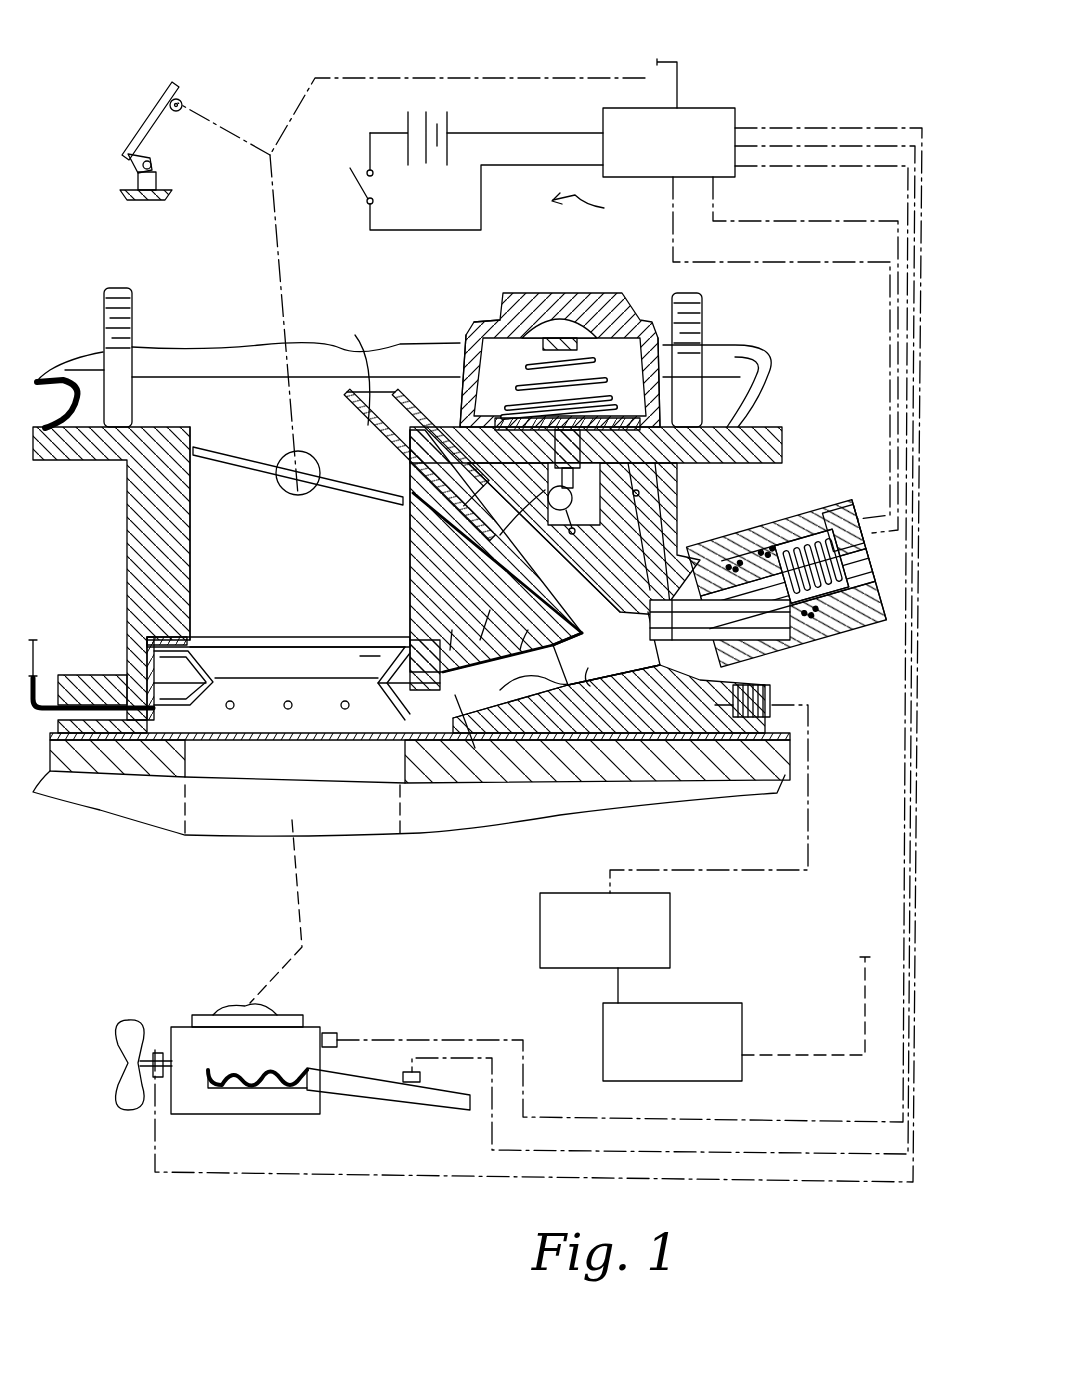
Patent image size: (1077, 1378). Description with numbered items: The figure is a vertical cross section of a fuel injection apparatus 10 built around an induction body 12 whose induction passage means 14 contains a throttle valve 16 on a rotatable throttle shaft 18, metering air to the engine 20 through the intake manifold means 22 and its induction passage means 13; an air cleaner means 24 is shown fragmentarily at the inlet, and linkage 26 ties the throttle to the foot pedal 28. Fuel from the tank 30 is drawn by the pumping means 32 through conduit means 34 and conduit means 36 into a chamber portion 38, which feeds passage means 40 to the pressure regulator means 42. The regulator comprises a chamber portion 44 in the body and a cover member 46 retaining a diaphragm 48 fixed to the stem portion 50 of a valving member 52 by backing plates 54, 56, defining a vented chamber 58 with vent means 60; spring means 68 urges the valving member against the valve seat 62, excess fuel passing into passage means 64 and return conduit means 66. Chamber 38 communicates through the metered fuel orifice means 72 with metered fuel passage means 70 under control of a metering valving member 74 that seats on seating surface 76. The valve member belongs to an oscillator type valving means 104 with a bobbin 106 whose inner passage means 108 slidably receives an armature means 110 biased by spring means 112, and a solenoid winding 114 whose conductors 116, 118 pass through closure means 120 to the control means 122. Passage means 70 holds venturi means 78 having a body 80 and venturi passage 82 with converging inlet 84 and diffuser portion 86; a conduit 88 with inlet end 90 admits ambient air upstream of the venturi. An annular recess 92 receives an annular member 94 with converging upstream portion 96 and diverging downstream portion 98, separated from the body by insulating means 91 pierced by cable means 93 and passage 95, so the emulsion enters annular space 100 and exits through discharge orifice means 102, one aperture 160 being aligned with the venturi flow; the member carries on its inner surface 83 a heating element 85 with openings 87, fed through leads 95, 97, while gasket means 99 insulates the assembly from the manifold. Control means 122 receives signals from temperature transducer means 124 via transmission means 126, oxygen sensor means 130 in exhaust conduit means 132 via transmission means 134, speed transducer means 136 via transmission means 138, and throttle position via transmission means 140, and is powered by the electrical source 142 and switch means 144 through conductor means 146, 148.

The fuel injection apparatus 10 is at (200, 345).
The induction body 12 is at (124, 527).
The engine intake manifold induction passage means 13 is at (400, 745).
The induction passage means 14 is at (318, 574).
The throttle valve 16 is at (360, 497).
The throttle shaft 18 is at (288, 490).
The engine 20 is at (305, 1035).
The engine intake manifold means 22 is at (200, 830).
The air cleaner means 24 is at (70, 370).
The linkage and motion transmitting means 26 is at (272, 196).
The throttle pedal 28 is at (150, 100).
The fuel tank 30 is at (715, 1038).
The fuel pumping means 32 is at (655, 915).
The conduit means 34 is at (810, 790).
The conduit means 36 is at (660, 748).
The chamber portion 38 is at (665, 662).
The passage means 40 is at (640, 494).
The pressure regulator means 42 is at (556, 292).
The chamber portion 44 is at (648, 440).
The cover member 46 is at (628, 310).
The diaphragm 48 is at (470, 390).
The stem portion 50 is at (560, 410).
The valving member 52 is at (545, 465).
The diaphragm backing plate 54 is at (672, 428).
The diaphragm backing plate 56 is at (420, 462).
The chamber 58 is at (600, 378).
The vent means 60 is at (470, 355).
The valve seat 62 is at (574, 502).
The passage means 64 is at (516, 517).
The fuel return conduit means 66 is at (578, 520).
The spring means 68 is at (535, 338).
The metered fuel passage means 70 is at (603, 690).
The metered fuel orifice means 72 is at (628, 618).
The metering valving member 74 is at (650, 655).
The seating surface 76 is at (642, 582).
The venturi means 78 is at (520, 700).
The body 80 is at (496, 611).
The venturi passage 82 is at (480, 734).
The inner surface 83 is at (352, 655).
The converging inlet surface portion 84 is at (531, 626).
The heating element 85 is at (430, 645).
The diffuser surface portion 86 is at (451, 626).
The openings 87 is at (348, 704).
The conduit 88 is at (500, 563).
The inlet end 90 is at (347, 368).
The insulating means 91 is at (145, 640).
The annular recess 92 is at (147, 657).
The cable means 93 is at (108, 740).
The annular member 94 is at (281, 628).
The passage 95 is at (33, 640).
The upstream annular body portion 96 is at (236, 660).
The lead 97 is at (40, 690).
The downstream annular body portion 98 is at (268, 748).
The gasket means 99 is at (770, 740).
The annular space 100 is at (172, 690).
The discharge orifice means 102 is at (229, 710).
The oscillator type valving means 104 is at (830, 640).
The bobbin 106 is at (858, 612).
The inner passage means 108 is at (745, 560).
The armature means 110 is at (765, 612).
The spring means 112 is at (800, 558).
The solenoid winding 114 is at (770, 540).
The electrical conductor 116 is at (775, 264).
The electrical conductor 118 is at (748, 222).
The closure means 120 is at (868, 592).
The control means 122 is at (720, 115).
The engine temperature responsive transducer means 124 is at (332, 1035).
The transmission means 126 is at (790, 165).
The sensor means 130 is at (408, 1060).
The engine exhaust conduit means 132 is at (452, 1108).
The transmission means 134 is at (825, 146).
The engine speed responsive transducer means 136 is at (157, 1050).
The transmission means 138 is at (775, 130).
The transmission means 140 is at (455, 78).
The source of electrical potential 142 is at (407, 118).
The switch means 144 is at (353, 182).
The conductor means 146 is at (410, 232).
The conductor means 148 is at (520, 135).
The aperture 160 is at (400, 712).